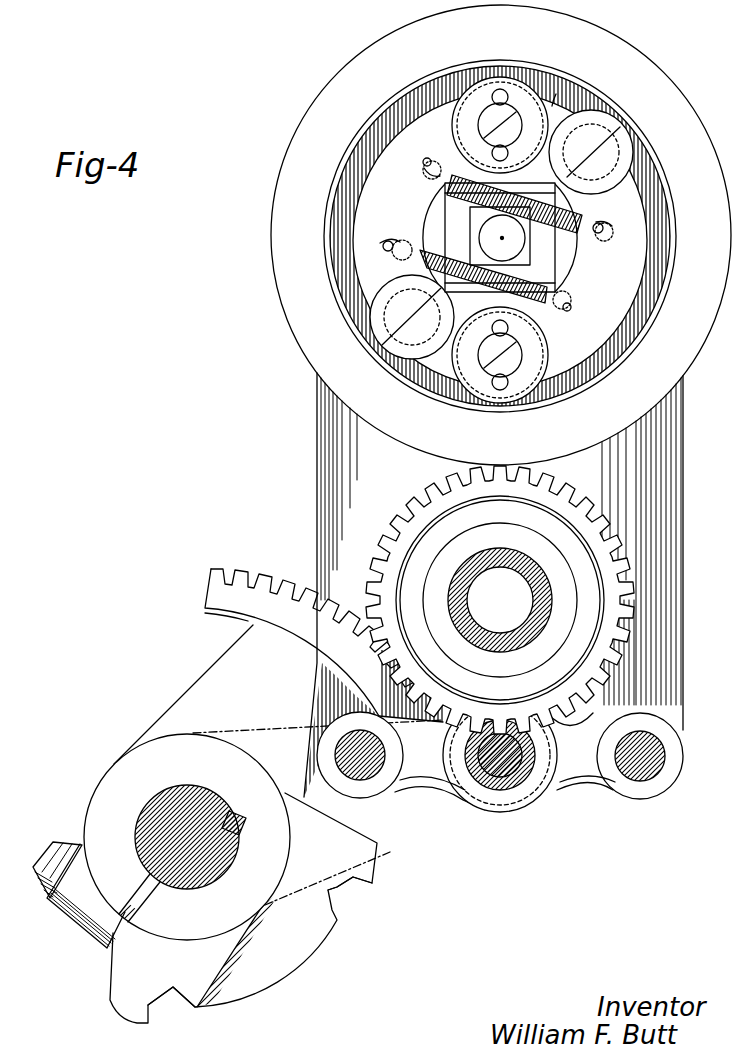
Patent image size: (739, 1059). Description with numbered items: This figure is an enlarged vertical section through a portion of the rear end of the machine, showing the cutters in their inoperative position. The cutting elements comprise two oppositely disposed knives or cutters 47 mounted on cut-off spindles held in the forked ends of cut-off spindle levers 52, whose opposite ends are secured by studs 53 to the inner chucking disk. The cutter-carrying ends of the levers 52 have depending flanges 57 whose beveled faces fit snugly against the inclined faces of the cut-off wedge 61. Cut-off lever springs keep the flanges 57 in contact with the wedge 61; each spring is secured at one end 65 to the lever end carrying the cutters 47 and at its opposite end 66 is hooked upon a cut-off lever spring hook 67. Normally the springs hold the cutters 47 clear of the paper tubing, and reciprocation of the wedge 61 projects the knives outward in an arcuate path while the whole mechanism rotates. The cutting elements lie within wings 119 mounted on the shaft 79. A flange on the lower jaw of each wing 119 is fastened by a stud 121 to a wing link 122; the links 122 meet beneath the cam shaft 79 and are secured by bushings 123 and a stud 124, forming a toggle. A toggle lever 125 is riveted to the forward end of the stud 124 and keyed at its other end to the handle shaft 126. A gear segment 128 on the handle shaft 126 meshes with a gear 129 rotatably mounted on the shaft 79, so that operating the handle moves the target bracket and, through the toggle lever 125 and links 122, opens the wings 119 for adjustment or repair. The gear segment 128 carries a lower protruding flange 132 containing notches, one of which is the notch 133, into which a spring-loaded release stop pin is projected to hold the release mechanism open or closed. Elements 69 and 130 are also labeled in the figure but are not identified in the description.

The wings 119 is at (658, 80).
The depending flanges 57 is at (556, 94).
The knives or cutters 47 is at (496, 79).
The studs 53 is at (606, 138).
The cut-off spindle levers 52 is at (378, 208).
The cut-off wedge 61 is at (548, 265).
The spring end 65 is at (436, 162).
The opposite spring end 66 is at (410, 240).
The cut-off lever spring hooks 67 is at (488, 252).
The lever 69 is at (437, 212).
The shaft 79 is at (494, 578).
The gear 129 is at (612, 546).
The gear segment 128 is at (240, 580).
The handle shaft 126 is at (192, 803).
The stud 121 is at (362, 777).
The wing link 122 is at (427, 780).
The bushings 123 is at (505, 768).
The stud 124 is at (503, 770).
The toggle lever 125 is at (388, 847).
The notch 130 is at (359, 898).
The lower protruding flange 132 is at (275, 970).
The notch 133 is at (173, 1017).